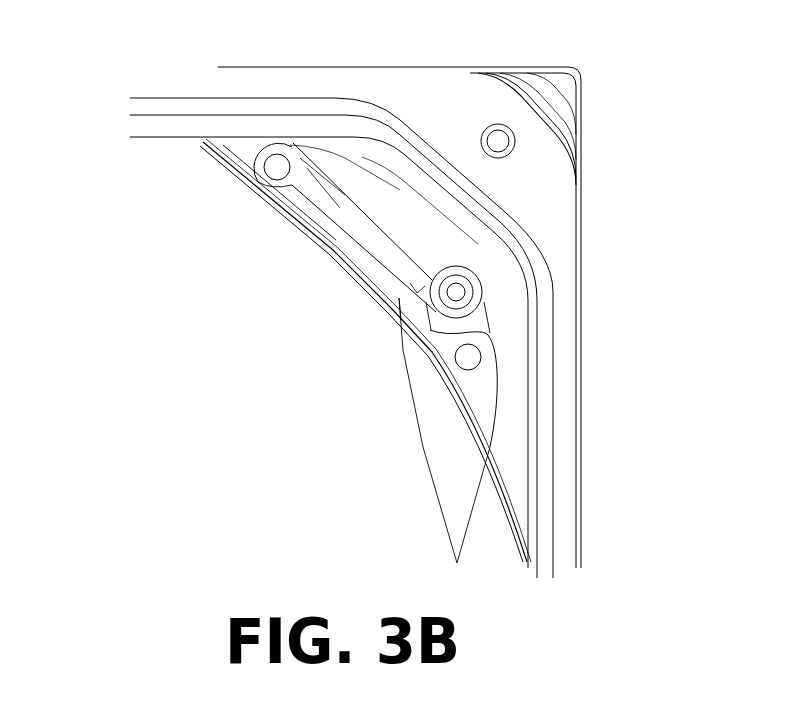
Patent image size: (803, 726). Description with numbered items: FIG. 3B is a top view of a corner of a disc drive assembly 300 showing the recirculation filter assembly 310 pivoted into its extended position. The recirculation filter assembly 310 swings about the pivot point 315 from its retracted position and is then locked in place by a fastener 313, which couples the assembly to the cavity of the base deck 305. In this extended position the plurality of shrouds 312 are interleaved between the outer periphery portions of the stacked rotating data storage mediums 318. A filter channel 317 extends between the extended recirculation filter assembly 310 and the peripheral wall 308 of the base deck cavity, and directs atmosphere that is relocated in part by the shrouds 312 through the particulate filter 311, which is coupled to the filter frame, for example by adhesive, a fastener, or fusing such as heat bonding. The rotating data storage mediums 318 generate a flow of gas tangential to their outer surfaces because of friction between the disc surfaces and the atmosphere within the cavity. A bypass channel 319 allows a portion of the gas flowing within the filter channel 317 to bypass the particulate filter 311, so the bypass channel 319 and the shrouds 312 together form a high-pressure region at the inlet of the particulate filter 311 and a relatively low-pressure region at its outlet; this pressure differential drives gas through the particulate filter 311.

The disc drive assembly 300 is at (620, 88).
The base deck 305 is at (515, 202).
The peripheral wall 308 is at (512, 452).
The recirculation filter assembly 310 is at (400, 238).
The particulate filter 311 is at (350, 200).
The shrouds 312 is at (432, 483).
The fastener 313 is at (460, 298).
The pivot point 315 is at (250, 172).
The filter channel 317 is at (492, 373).
The rotating data storage mediums 318 is at (265, 403).
The bypass channel 319 is at (286, 140).